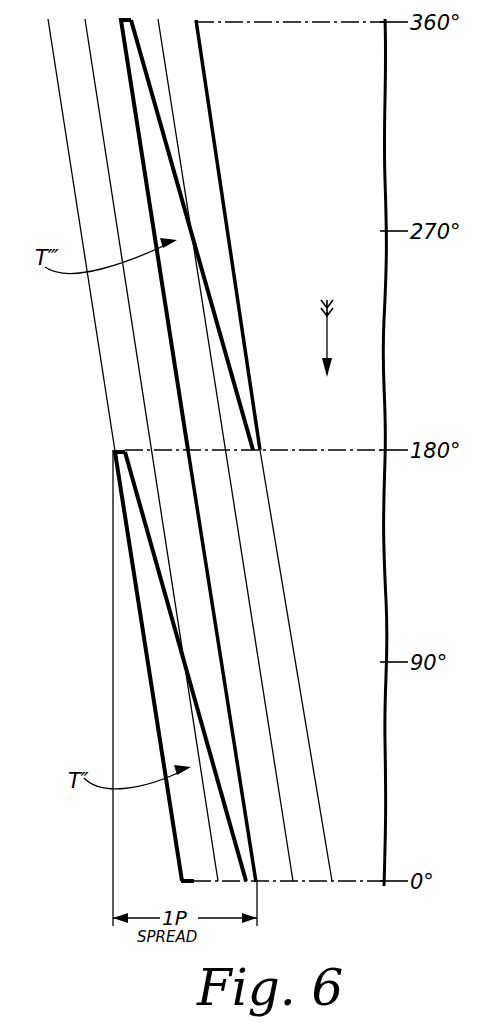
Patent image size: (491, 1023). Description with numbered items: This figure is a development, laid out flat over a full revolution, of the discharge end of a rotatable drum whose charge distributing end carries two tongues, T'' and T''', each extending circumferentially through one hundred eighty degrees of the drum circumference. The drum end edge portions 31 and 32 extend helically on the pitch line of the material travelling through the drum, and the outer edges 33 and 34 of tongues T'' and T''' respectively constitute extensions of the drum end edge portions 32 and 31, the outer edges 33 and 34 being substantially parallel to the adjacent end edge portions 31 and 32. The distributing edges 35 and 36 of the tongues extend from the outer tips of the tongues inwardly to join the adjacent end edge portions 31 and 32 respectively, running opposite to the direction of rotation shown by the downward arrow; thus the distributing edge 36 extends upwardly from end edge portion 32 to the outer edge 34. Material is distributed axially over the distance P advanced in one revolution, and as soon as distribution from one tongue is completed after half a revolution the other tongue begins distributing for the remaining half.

The drum end edge portion 31 is at (218, 654).
The drum end edge portion 32 is at (227, 216).
The outer edge of tongue T'' 33 is at (143, 642).
The outer edge of tongue T''' 34 is at (143, 163).
The distributing edge of tongue T'' 35 is at (161, 578).
The distributing edge of tongue T''' 36 is at (169, 153).